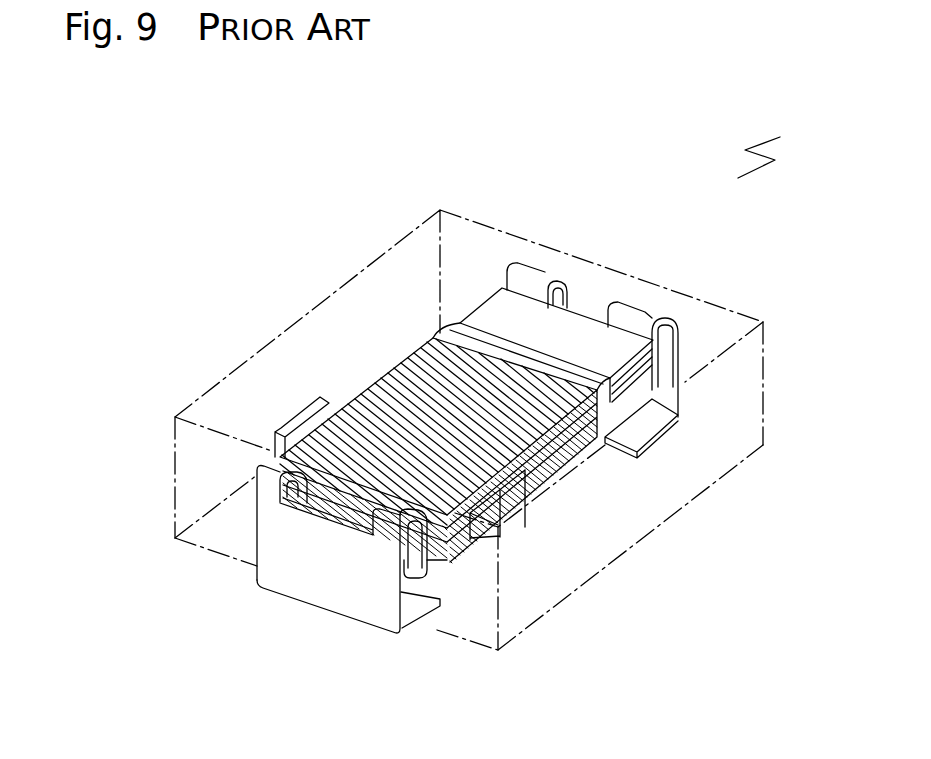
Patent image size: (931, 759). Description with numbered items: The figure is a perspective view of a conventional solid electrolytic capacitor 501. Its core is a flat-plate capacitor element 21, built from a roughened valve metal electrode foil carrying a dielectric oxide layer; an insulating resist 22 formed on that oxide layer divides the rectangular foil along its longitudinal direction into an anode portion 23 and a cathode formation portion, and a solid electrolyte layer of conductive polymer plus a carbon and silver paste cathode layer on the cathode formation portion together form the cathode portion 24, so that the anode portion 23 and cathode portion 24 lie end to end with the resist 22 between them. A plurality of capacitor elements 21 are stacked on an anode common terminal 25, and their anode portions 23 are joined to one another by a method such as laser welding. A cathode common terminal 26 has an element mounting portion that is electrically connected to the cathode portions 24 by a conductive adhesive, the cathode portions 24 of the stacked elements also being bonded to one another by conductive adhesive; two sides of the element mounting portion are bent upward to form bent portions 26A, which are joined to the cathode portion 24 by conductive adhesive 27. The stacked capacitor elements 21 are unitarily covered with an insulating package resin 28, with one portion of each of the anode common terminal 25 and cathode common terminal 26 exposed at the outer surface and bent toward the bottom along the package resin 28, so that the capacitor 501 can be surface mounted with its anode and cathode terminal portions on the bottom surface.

The capacitor element 21 is at (380, 368).
The insulating resist 22 is at (447, 335).
The anode portion 23 is at (493, 315).
The cathode portion 24 is at (360, 403).
The anode common terminal 25 is at (636, 310).
The cathode common terminal 26 is at (313, 563).
The bent portion 26A is at (488, 545).
The conductive adhesive 27 is at (501, 493).
The package resin 28 is at (703, 313).
The solid electrolytic capacitor 501 is at (763, 139).